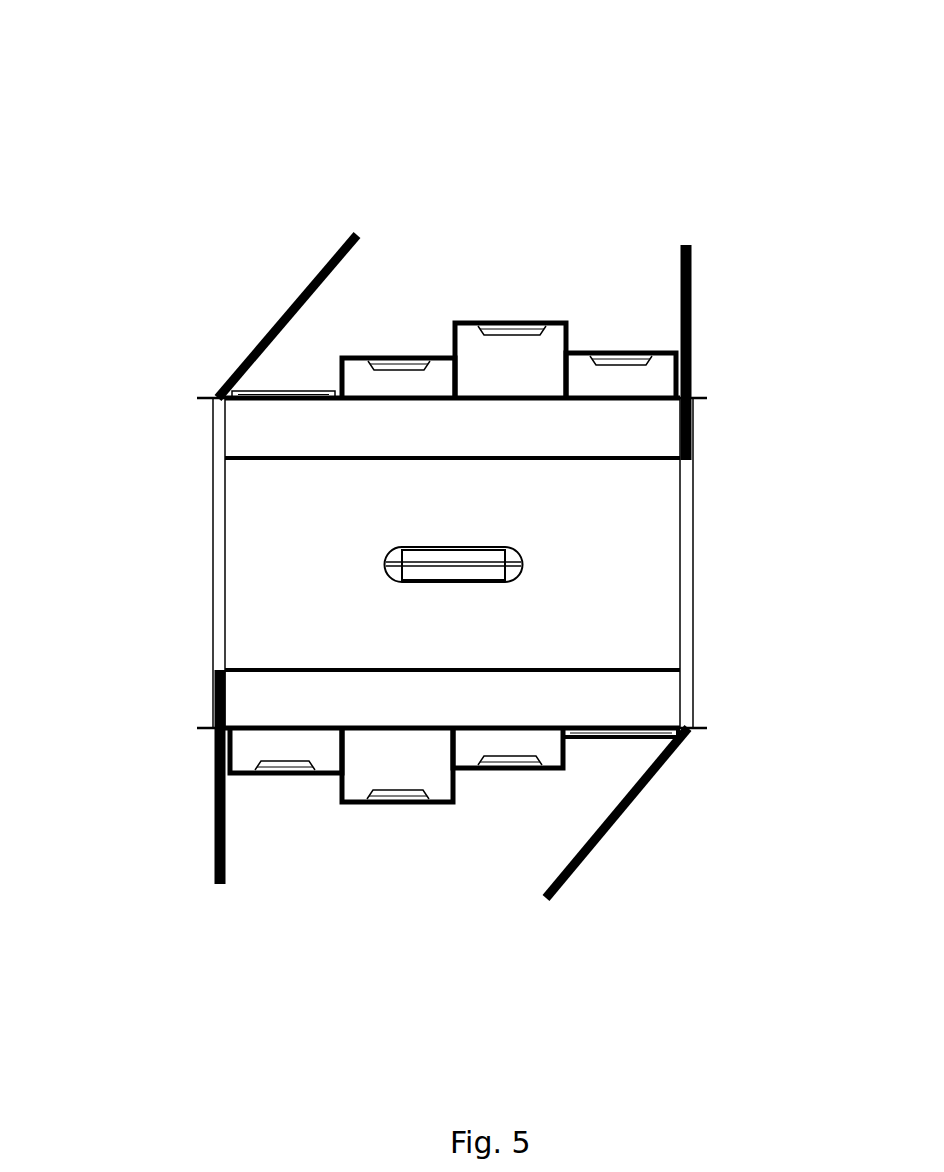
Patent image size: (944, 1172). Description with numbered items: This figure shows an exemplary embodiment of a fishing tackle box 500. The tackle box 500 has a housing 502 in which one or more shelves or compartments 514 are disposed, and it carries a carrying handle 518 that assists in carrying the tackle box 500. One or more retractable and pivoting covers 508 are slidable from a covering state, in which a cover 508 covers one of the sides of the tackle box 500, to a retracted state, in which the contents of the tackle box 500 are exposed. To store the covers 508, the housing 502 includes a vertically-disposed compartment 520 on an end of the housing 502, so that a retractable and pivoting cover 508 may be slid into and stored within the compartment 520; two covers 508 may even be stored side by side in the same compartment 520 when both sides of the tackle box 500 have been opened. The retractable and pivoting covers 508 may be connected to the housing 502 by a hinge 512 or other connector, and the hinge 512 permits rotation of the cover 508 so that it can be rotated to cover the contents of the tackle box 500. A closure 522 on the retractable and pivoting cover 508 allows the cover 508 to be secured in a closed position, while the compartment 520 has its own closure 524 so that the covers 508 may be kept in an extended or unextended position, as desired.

The fishing tackle box 500 is at (460, 465).
The housing 502 is at (240, 492).
The retractable and pivoting cover 508 is at (698, 363).
The hinge 512 is at (214, 398).
The shelves or compartments 514 is at (623, 737).
The carrying handle 518 is at (431, 543).
The vertically-disposed compartment 520 is at (222, 560).
The closure 522 is at (352, 228).
The closure 524 is at (212, 735).